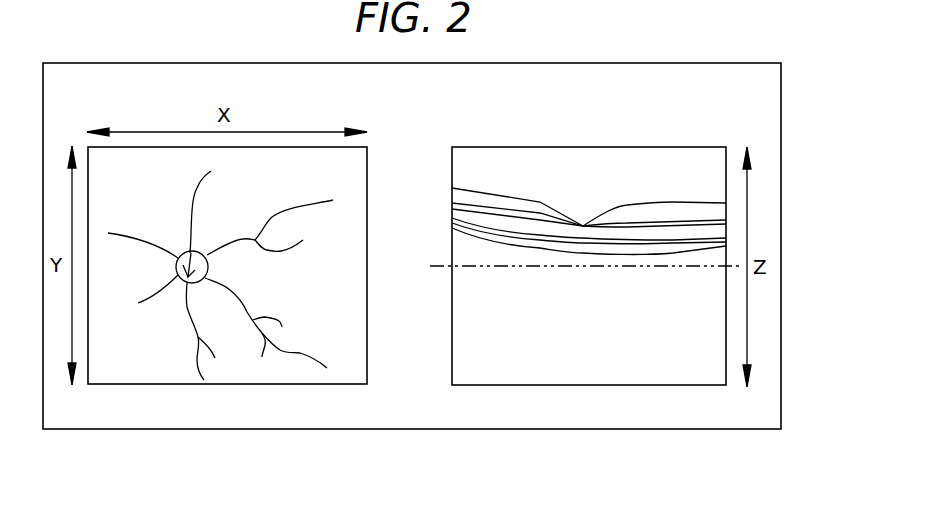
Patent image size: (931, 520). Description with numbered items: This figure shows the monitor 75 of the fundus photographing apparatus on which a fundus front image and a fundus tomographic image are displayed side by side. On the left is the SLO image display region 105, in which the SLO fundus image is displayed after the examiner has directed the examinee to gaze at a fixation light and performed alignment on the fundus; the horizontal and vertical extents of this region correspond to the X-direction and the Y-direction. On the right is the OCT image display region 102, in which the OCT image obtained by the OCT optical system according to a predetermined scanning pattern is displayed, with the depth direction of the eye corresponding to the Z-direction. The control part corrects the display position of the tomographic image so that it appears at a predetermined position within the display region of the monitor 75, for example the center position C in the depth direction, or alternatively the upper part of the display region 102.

The monitor 75 is at (652, 418).
The SLO image display region 105 is at (367, 337).
The OCT image display region 102 is at (452, 177).